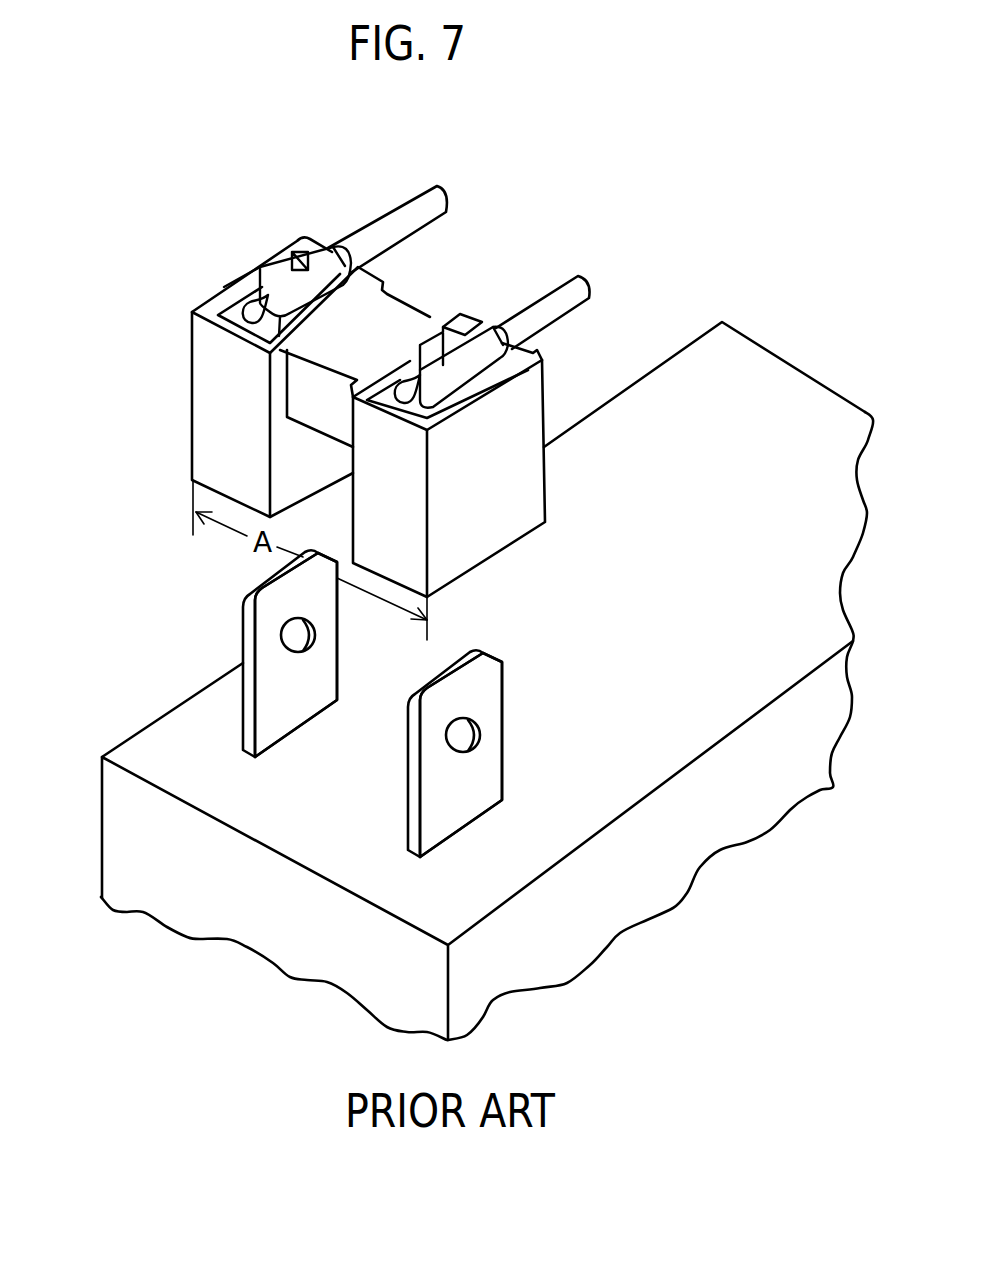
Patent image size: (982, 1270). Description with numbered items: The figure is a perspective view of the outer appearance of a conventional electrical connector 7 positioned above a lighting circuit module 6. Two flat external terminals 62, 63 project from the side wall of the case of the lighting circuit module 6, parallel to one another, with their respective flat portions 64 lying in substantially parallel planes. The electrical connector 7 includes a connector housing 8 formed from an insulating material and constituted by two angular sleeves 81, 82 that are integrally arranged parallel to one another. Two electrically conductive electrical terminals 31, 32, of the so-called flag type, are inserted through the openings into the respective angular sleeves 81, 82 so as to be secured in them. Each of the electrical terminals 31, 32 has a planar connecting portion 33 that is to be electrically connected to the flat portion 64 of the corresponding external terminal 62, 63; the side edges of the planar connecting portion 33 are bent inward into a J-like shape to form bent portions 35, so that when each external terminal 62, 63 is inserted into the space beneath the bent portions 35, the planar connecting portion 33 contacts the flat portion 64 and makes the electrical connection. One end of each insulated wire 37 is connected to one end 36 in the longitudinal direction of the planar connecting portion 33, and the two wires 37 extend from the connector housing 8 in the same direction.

The lighting circuit module 6 is at (446, 795).
The electrical connector 7 is at (476, 638).
The connector housing 8 is at (255, 377).
The angular sleeve 81 is at (208, 425).
The angular sleeve 82 is at (530, 423).
The electrical terminal 31 is at (226, 288).
The electrical terminal 32 is at (447, 327).
The planar connecting portion 33 is at (292, 252).
The bent portion 35 is at (290, 310).
The end of the planar connecting portion 36 is at (340, 266).
The wire 37 is at (398, 218).
The external terminal 62 is at (243, 622).
The external terminal 63 is at (507, 713).
The flat portion 64 is at (267, 700).